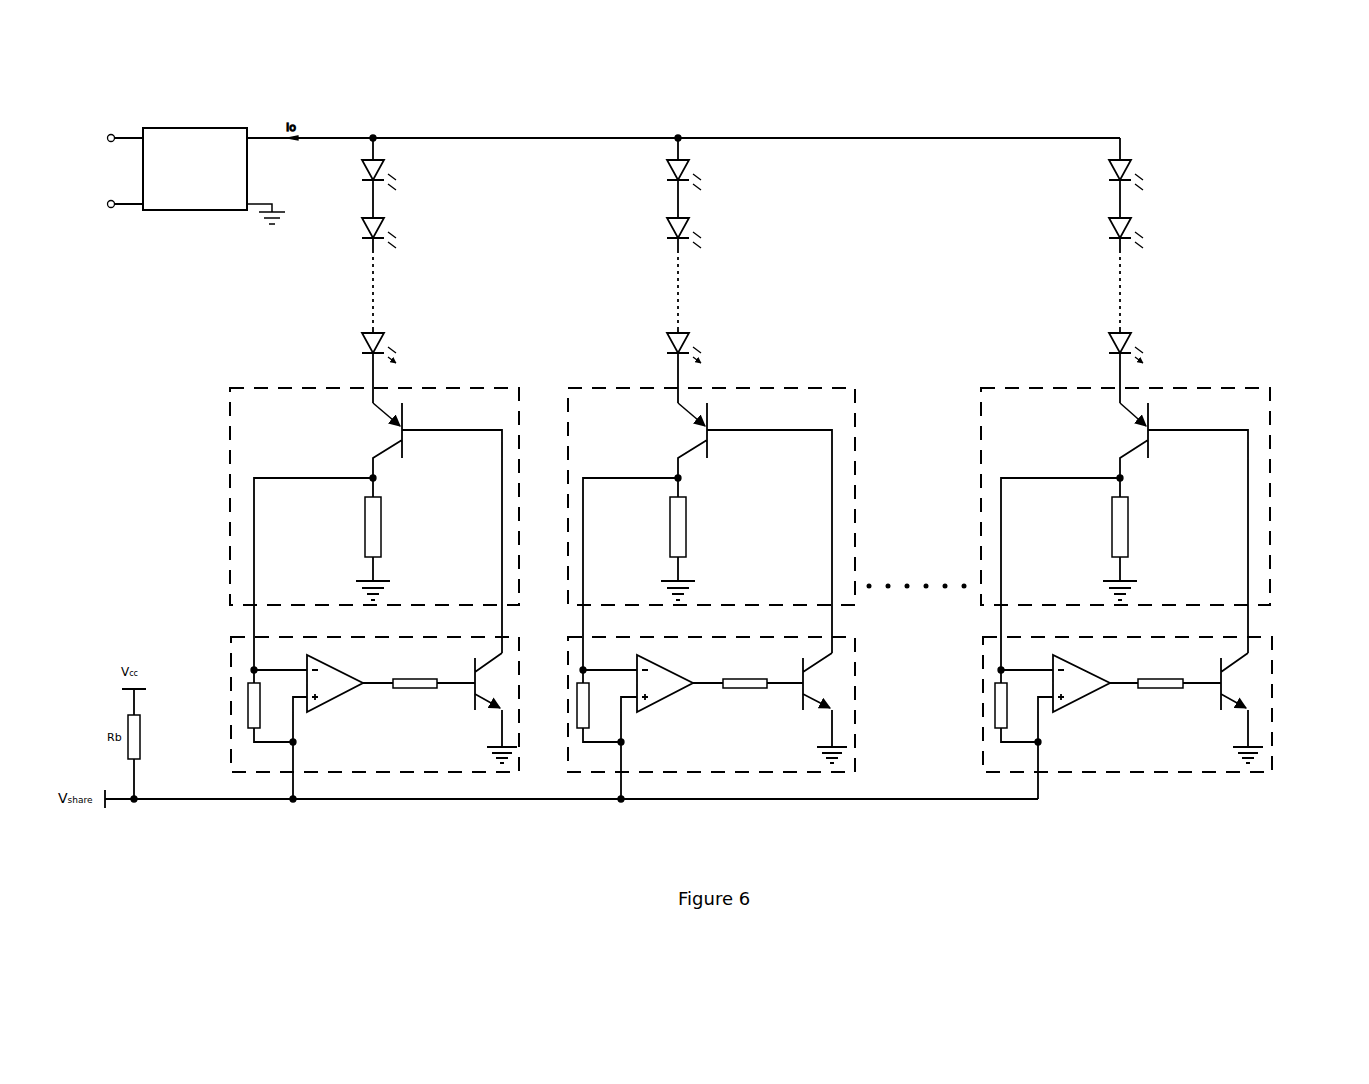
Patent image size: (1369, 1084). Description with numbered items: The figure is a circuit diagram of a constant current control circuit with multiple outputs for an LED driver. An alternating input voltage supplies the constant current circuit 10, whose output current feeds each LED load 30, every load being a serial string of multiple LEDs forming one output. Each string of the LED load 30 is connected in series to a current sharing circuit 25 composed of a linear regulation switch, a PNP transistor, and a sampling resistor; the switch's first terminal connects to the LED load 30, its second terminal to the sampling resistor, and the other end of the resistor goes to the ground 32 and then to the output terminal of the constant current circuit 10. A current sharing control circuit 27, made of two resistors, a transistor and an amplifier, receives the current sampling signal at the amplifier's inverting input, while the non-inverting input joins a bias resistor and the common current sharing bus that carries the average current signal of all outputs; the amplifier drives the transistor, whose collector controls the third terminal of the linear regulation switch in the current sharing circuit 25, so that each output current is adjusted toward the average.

The constant current circuit 10 is at (175, 128).
The LED load 30 is at (395, 209).
The current sharing circuit 25 is at (250, 388).
The current sharing control circuit 27 is at (231, 637).
The ground 32 is at (363, 590).